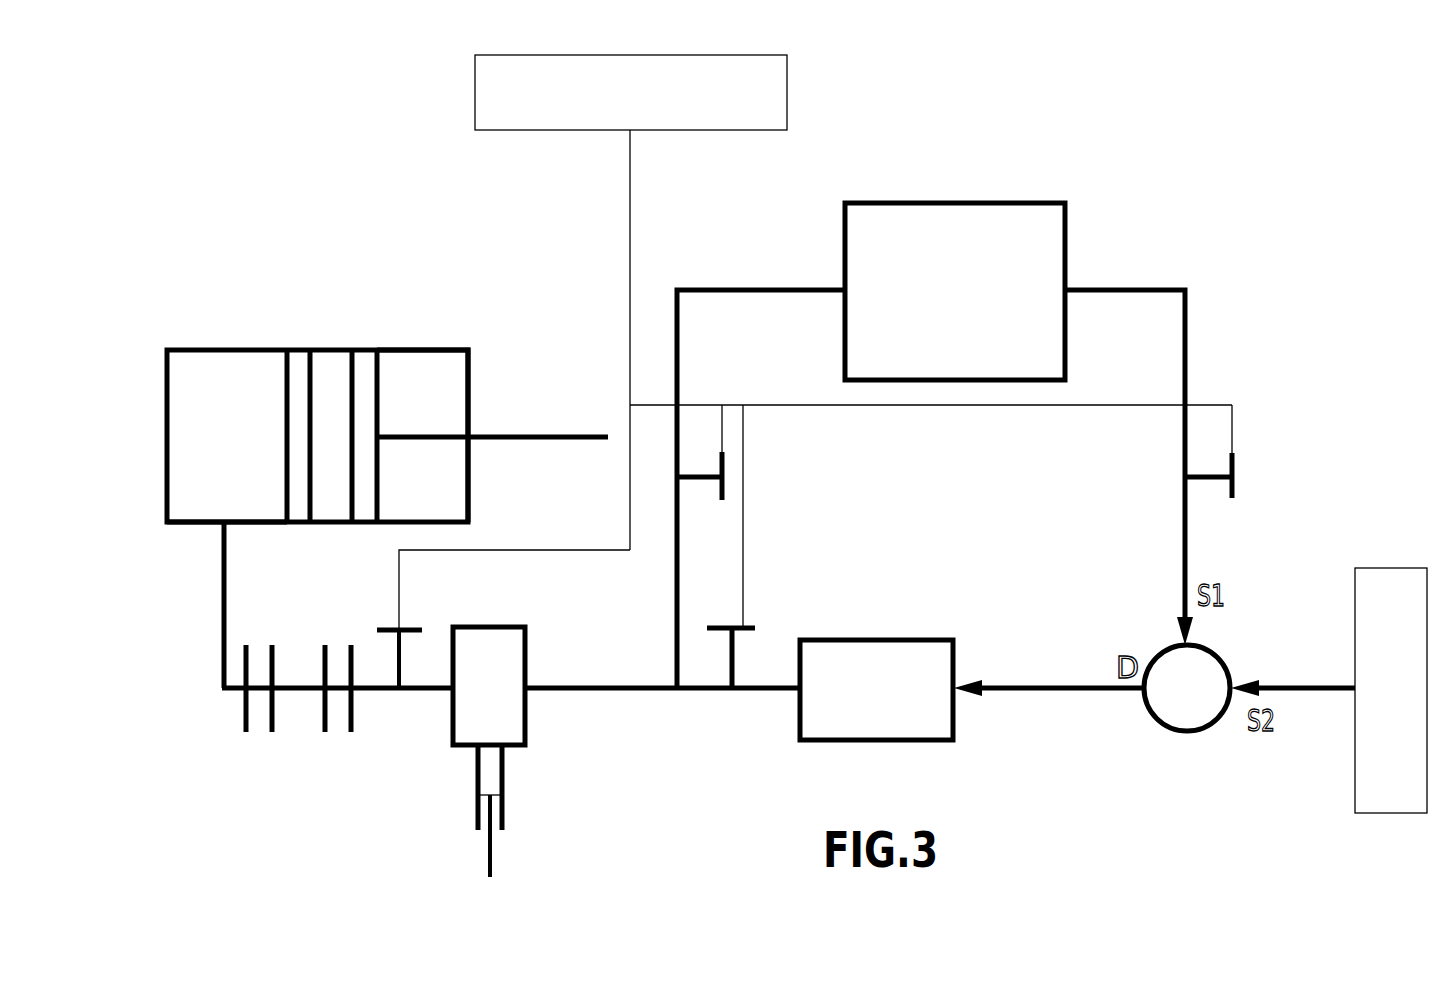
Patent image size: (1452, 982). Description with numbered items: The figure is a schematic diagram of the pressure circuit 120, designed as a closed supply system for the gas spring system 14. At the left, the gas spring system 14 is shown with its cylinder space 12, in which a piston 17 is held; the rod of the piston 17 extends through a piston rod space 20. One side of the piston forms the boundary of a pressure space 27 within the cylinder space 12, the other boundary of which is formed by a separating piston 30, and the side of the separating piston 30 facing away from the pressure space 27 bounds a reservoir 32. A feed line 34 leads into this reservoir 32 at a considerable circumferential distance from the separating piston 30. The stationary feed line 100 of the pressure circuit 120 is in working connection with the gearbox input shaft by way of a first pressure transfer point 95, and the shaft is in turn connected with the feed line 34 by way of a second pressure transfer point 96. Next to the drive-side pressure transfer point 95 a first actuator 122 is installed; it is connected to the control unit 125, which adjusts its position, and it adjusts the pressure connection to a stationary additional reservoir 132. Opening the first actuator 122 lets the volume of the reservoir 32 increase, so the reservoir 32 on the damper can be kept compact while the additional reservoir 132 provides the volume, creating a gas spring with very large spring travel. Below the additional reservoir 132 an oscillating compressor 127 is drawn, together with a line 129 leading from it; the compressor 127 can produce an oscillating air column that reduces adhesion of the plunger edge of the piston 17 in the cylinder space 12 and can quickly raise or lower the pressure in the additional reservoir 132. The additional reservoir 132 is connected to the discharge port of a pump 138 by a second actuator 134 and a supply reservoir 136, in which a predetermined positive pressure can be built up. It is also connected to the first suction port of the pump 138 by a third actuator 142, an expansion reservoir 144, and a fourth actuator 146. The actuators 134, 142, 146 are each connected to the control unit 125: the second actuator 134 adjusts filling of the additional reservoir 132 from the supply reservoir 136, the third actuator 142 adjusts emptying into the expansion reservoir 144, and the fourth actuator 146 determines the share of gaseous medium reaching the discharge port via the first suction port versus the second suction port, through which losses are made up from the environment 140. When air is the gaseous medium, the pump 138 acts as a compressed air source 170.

The cylinder space 12 is at (219, 348).
The gas spring system 14 is at (363, 434).
The piston 17 is at (380, 434).
The piston rod space 20 is at (448, 350).
The pressure space 27 is at (325, 358).
The separating piston 30 is at (296, 358).
The reservoir 32 is at (188, 510).
The feed line 34 is at (221, 620).
The first pressure transfer point 95 is at (333, 648).
The second pressure transfer point 96 is at (258, 746).
The feed line 100 is at (365, 693).
The pressure circuit 120 is at (1198, 162).
The first actuator 122 is at (401, 665).
The control unit 125 is at (780, 85).
The oscillating compressor 127 is at (492, 772).
The drain line 129 is at (479, 827).
The additional reservoir 132 is at (511, 703).
The second actuator 134 is at (733, 663).
The supply reservoir 136 is at (887, 742).
The pump 138 is at (1210, 650).
The environment 140 is at (1385, 578).
The third actuator 142 is at (684, 477).
The expansion reservoir 144 is at (1025, 210).
The fourth actuator 146 is at (1235, 467).
The compressed air source 170 is at (1192, 695).